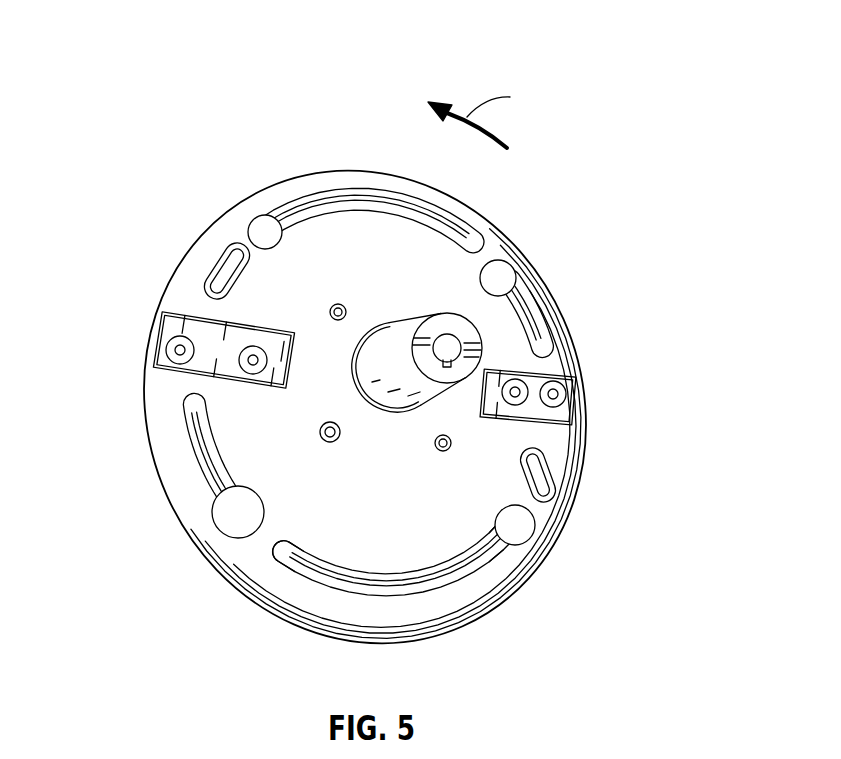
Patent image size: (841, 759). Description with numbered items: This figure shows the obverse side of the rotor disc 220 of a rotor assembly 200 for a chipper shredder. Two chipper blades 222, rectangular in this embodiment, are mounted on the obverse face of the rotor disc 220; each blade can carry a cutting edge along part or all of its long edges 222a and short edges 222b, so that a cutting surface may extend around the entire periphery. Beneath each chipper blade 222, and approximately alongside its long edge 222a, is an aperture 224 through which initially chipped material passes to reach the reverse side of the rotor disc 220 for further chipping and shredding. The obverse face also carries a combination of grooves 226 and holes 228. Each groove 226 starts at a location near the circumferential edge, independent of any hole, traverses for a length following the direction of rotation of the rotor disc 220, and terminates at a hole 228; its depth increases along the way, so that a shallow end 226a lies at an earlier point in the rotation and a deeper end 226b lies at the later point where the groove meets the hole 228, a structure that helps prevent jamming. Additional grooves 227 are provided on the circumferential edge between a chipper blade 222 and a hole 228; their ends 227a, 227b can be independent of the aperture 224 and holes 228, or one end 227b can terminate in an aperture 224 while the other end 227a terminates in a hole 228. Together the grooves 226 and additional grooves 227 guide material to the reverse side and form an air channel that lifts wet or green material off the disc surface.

The rotor assembly 200 is at (186, 47).
The rotor disc 220 is at (224, 214).
The chipper blades 222 is at (163, 333).
The long edges 222a is at (240, 320).
The short edges 222b is at (147, 340).
The aperture 224 is at (164, 317).
The grooves 226 is at (349, 402).
The shallow end 226a is at (296, 562).
The deeper end 226b is at (488, 544).
The additional grooves 227 is at (213, 284).
The end of additional groove 227a is at (548, 492).
The end of additional groove 227b is at (553, 448).
The holes 228 is at (259, 226).